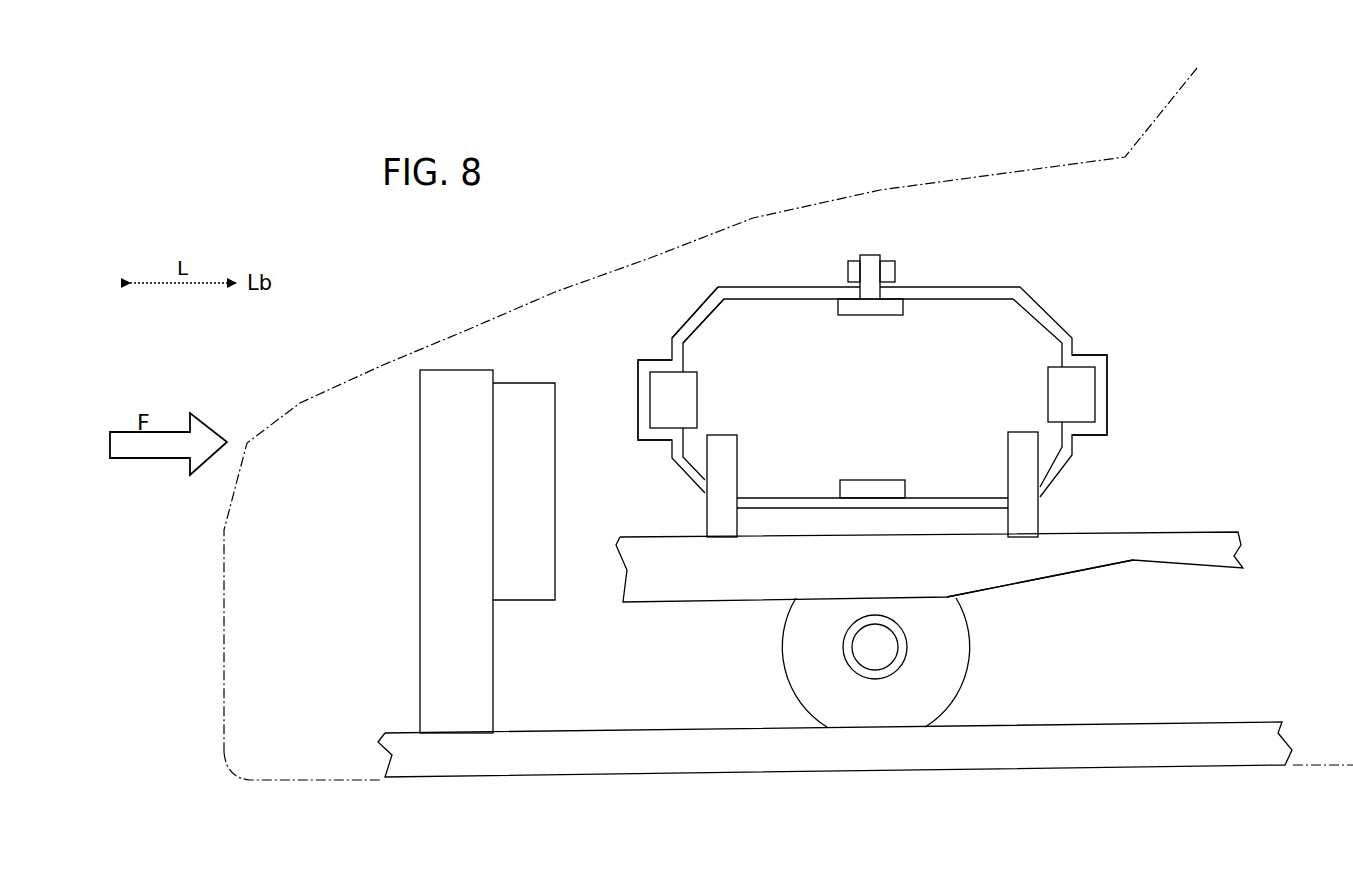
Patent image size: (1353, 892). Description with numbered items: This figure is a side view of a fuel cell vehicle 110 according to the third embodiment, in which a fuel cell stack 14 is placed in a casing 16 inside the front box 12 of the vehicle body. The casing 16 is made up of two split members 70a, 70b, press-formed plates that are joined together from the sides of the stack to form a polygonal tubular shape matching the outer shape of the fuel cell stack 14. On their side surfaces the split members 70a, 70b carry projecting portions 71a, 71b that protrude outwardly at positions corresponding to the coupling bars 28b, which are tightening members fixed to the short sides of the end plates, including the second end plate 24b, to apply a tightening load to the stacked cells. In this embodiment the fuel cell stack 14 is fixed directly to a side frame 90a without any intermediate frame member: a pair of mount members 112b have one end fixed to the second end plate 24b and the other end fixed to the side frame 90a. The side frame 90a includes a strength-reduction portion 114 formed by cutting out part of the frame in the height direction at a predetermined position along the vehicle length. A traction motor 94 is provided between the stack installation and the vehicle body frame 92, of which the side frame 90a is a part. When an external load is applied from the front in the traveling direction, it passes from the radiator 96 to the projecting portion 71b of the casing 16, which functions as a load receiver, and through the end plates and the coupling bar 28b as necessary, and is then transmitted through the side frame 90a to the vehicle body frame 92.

The front box 12 is at (887, 210).
The fuel cell stack 14 is at (1005, 317).
The casing 16 is at (822, 283).
The second end plate 24b is at (717, 343).
The coupling bar 28b is at (687, 392).
The split member 70a is at (953, 285).
The split member 70b is at (788, 285).
The projecting portion 71a is at (1108, 390).
The projecting portion 71b is at (640, 400).
The side frame 90a is at (1002, 580).
The vehicle body frame 92 is at (613, 747).
The traction motor 94 is at (955, 652).
The radiator 96 is at (433, 507).
The fuel cell vehicle 110 is at (460, 261).
The mount member 112b is at (720, 453).
The strength-reduction portion 114 is at (1135, 550).